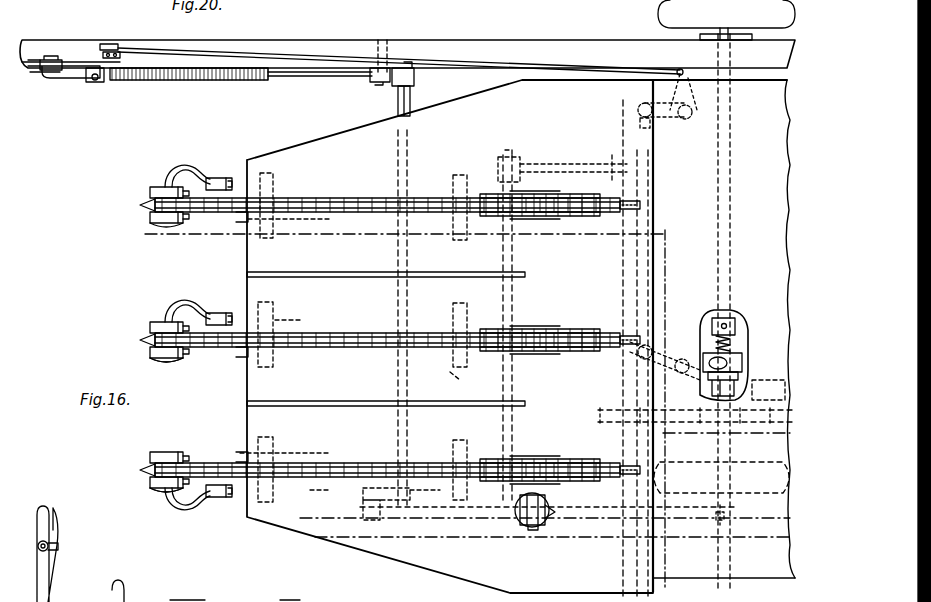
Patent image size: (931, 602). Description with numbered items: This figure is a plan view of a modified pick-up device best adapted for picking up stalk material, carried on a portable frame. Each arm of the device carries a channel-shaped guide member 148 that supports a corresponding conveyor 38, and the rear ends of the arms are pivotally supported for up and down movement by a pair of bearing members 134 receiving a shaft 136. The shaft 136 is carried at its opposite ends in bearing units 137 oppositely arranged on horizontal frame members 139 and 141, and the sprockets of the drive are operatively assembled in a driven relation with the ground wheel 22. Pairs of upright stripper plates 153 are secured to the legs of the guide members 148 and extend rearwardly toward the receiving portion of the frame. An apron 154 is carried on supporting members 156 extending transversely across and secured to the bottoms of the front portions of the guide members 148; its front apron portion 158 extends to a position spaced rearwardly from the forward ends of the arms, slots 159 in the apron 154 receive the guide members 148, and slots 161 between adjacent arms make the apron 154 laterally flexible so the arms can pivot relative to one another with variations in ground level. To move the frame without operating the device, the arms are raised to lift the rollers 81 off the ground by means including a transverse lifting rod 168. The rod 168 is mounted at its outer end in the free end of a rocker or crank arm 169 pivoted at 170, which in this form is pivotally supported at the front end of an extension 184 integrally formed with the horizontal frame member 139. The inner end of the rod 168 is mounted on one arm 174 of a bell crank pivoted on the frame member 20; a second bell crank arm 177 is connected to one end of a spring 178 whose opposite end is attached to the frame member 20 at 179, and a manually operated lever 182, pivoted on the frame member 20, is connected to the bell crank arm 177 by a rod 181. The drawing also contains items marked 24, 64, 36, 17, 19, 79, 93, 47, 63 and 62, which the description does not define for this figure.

The frame member 20 is at (466, 35).
The mounting plate 24 is at (728, 36).
The bracket 64 is at (118, 42).
The manually operated lever 182 is at (55, 62).
The rod 181 is at (62, 80).
The spring attachment point 179 is at (96, 82).
The spring 178 is at (204, 82).
The second bell crank arm 177 is at (372, 80).
The bell crank arm 174 is at (414, 76).
The rod 168 is at (408, 102).
The front apron portion 158 is at (292, 527).
The apron 154 is at (429, 579).
The side frame 36 is at (738, 576).
The section line 17 is at (157, 244).
The section line 19 is at (319, 548).
The ground wheel 22 is at (730, 513).
The slots 161 is at (350, 275).
The slots 159 is at (606, 234).
The hook member 79 is at (182, 180).
The bearing units 137 is at (520, 155).
The horizontal frame member 141 is at (552, 162).
The guide member 148 is at (356, 330).
The rollers 81 is at (150, 325).
The lower collar 93 is at (172, 354).
The stripper plates 153 is at (548, 326).
The supporting members 156 is at (282, 318).
The conveyor 38 is at (303, 346).
The bearing members 134 is at (512, 306).
The shaft 136 is at (517, 404).
The shaft 47 is at (618, 303).
The pulley 63 is at (658, 306).
The tensioner housing 62 is at (732, 388).
The rocker arm 169 is at (360, 496).
The extension 184 is at (408, 516).
The pivot 170 is at (374, 520).
The horizontal frame member 139 is at (538, 510).